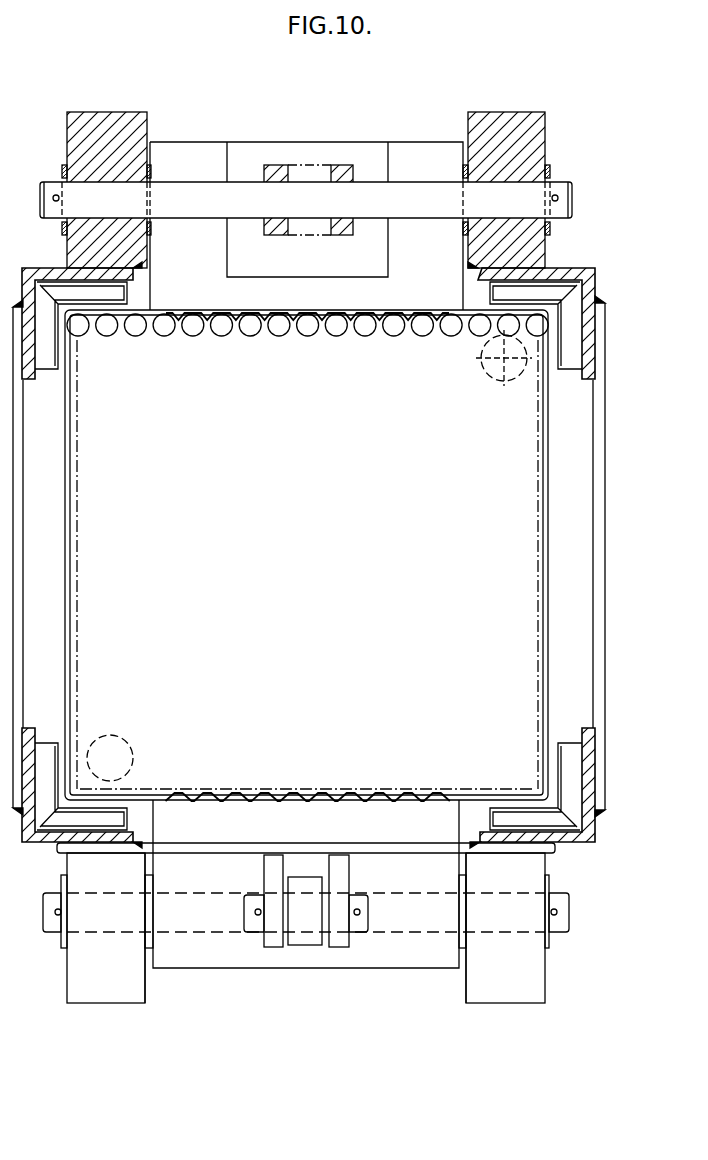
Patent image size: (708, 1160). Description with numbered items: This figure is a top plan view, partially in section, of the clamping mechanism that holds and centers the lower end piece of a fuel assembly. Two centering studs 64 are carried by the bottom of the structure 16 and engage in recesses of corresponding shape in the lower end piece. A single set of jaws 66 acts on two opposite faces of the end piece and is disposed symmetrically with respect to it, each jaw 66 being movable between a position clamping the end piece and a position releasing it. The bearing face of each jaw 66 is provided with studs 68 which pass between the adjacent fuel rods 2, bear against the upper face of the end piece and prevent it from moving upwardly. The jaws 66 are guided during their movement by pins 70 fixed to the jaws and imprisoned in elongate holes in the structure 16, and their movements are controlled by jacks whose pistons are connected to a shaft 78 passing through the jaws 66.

The fuel rods 2 is at (305, 322).
The structure 16 is at (592, 289).
The centering studs 64 is at (504, 376).
The jaws 66 is at (416, 152).
The studs 68 is at (205, 318).
The pins 70 is at (562, 908).
The shaft 78 is at (358, 920).